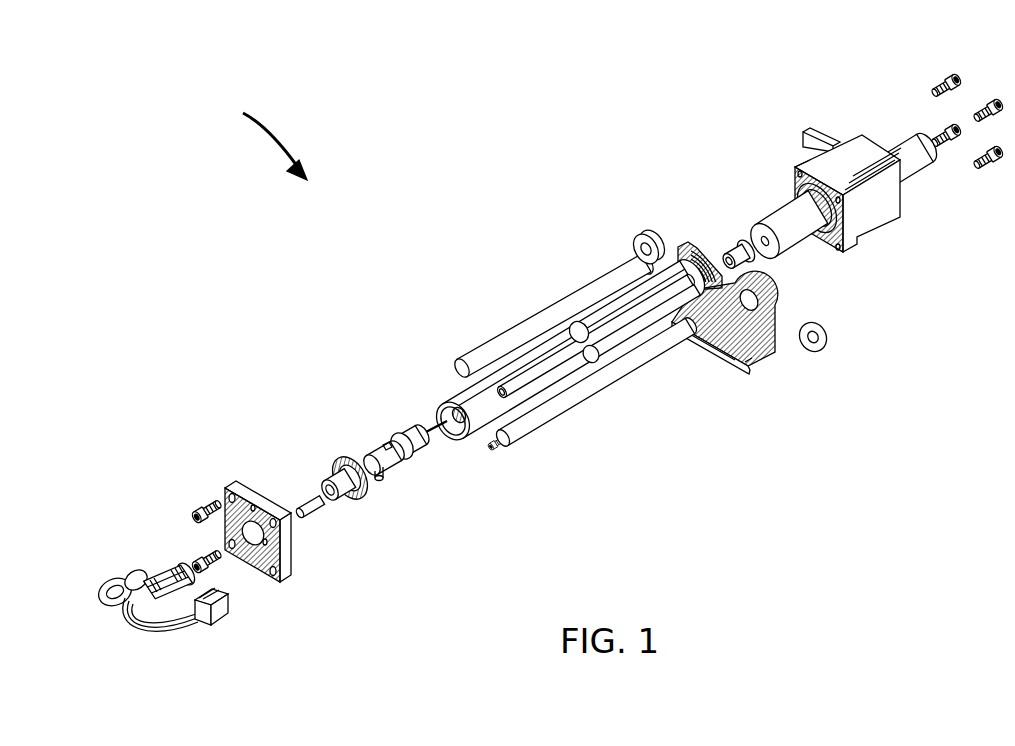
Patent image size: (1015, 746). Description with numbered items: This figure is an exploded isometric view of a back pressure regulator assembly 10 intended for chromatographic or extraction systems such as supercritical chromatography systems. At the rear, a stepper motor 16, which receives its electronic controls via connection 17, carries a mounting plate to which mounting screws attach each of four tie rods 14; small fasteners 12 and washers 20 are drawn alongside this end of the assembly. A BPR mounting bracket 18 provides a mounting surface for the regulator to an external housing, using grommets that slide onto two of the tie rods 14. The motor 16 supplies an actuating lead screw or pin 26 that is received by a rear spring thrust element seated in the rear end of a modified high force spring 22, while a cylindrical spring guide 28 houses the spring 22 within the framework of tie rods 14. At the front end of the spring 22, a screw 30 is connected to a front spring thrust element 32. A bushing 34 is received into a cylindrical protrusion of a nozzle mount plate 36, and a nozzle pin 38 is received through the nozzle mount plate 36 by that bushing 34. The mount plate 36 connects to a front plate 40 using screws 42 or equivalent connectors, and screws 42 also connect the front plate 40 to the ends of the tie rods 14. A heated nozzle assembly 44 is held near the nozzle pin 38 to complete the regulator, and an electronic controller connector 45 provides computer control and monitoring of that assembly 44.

The back pressure regulator assembly 10 is at (261, 134).
The fastener 12 is at (946, 77).
The tie rods 14 is at (540, 368).
The stepper motor 16 is at (850, 252).
The connection 17 is at (811, 130).
The BPR mounting bracket 18 is at (763, 368).
The washer 20 is at (640, 230).
The modified high force spring 22 is at (645, 363).
The actuating lead screw or pin 26 is at (764, 257).
The cylindrical spring guide 28 is at (590, 328).
The screw 30 is at (440, 436).
The front spring thrust element 32 is at (410, 460).
The bushing 34 is at (383, 451).
The nozzle mount plate 36 is at (352, 503).
The nozzle pin 38 is at (301, 516).
The front plate 40 is at (250, 494).
The screws 42 is at (393, 468).
The heated nozzle assembly 44 is at (165, 577).
The electronic controller connector 45 is at (173, 635).